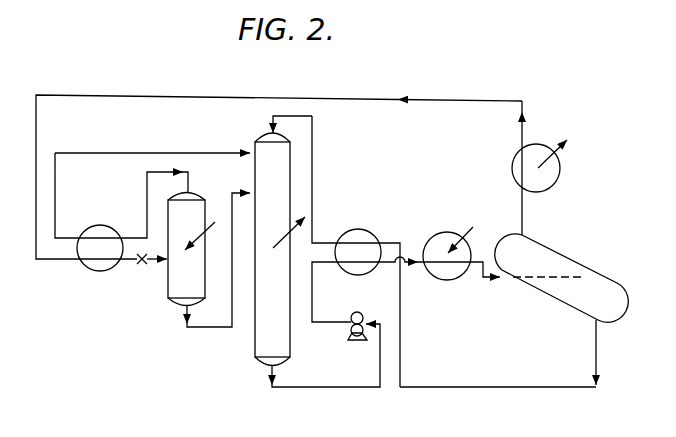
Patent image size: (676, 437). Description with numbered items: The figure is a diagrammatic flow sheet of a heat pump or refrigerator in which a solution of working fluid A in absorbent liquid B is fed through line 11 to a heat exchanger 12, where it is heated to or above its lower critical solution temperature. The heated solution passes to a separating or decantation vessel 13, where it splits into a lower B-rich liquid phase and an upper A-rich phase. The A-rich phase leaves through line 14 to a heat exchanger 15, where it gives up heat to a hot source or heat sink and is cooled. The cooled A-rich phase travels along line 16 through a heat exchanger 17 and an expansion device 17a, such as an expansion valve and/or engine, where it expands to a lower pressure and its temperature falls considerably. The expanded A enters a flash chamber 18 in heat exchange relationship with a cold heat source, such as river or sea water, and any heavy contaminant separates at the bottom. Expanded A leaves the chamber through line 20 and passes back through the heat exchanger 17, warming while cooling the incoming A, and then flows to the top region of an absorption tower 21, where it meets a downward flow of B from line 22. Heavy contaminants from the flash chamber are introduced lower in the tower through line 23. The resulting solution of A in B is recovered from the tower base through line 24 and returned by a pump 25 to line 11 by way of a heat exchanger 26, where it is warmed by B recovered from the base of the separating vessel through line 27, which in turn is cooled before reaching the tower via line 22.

The line 11 is at (401, 265).
The heat exchanger 12 is at (447, 231).
The separating or decantation vessel 13 is at (563, 252).
The line 14 is at (523, 212).
The heat exchanger 15 is at (560, 173).
The line 16 is at (167, 93).
The heat exchanger 17 is at (90, 277).
The expansion device 17a is at (140, 266).
The flash chamber 18 is at (168, 292).
The line 20 is at (145, 191).
The absorption tower 21 is at (253, 356).
The line 22 is at (313, 130).
The line 23 is at (203, 333).
The line 24 is at (336, 388).
The pump 25 is at (347, 337).
The heat exchanger 26 is at (367, 229).
The line 27 is at (512, 363).